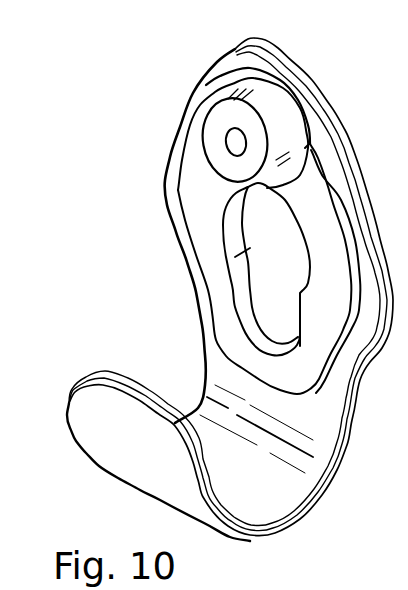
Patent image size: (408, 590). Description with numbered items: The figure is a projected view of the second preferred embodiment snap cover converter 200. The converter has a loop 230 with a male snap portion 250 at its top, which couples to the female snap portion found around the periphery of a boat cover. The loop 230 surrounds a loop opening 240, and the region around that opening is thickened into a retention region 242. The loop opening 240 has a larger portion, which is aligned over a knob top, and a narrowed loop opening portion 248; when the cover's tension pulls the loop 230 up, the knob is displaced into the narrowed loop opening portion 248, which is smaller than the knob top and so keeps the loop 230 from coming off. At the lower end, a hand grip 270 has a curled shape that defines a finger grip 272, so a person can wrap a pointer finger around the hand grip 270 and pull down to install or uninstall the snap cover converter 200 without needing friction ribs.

The snap cover converter 200 is at (102, 40).
The loop 230 is at (210, 54).
The male snap portion 250 is at (213, 128).
The retention region 242 is at (187, 205).
The loop opening 240 is at (221, 242).
The narrowed loop opening portion 248 is at (268, 306).
The finger grip 272 is at (133, 472).
The hand grip 270 is at (291, 536).